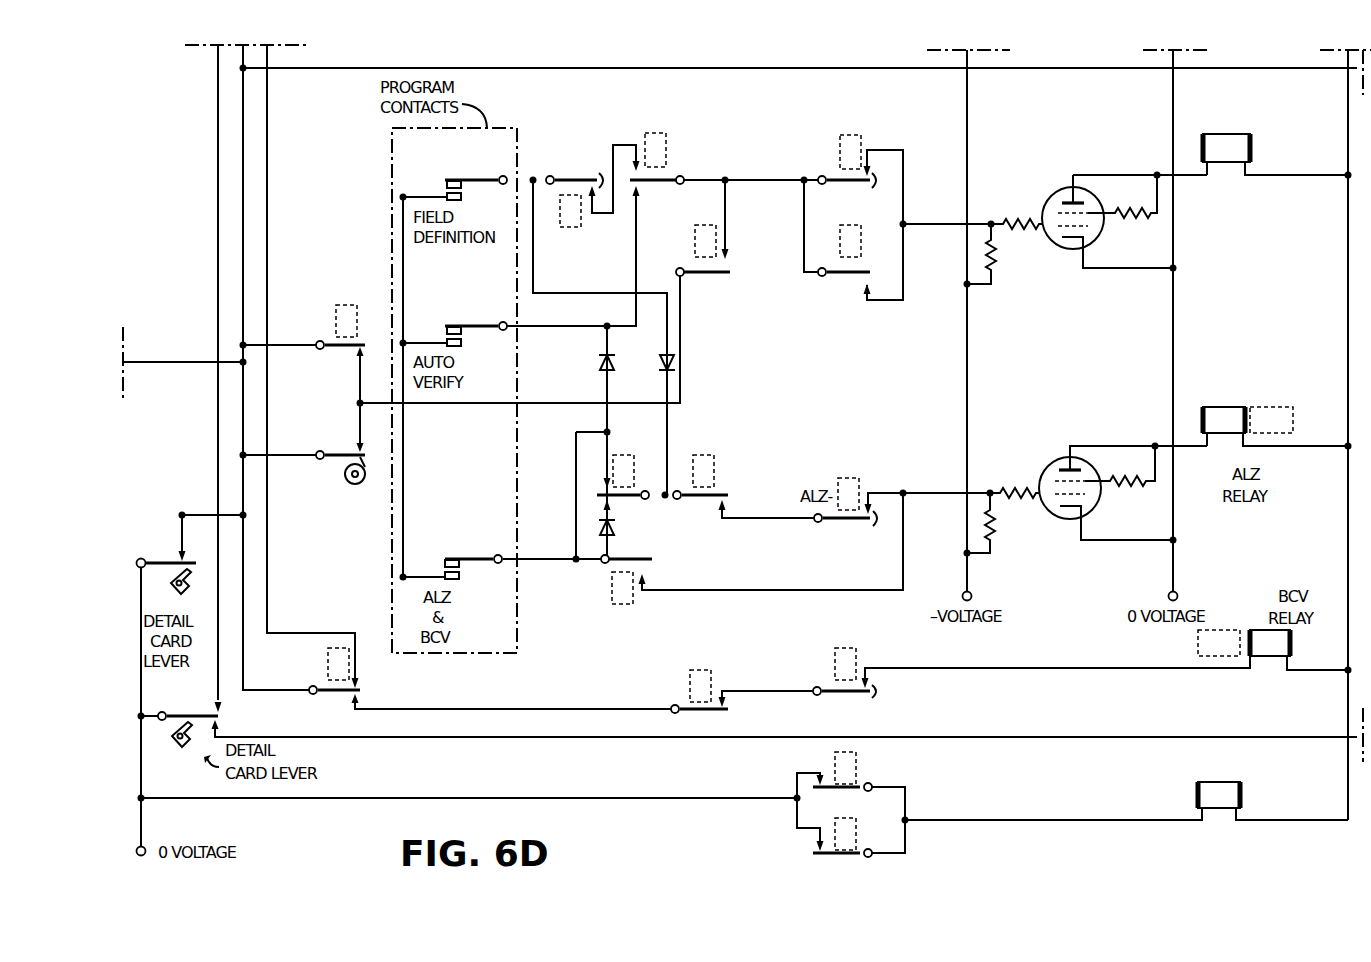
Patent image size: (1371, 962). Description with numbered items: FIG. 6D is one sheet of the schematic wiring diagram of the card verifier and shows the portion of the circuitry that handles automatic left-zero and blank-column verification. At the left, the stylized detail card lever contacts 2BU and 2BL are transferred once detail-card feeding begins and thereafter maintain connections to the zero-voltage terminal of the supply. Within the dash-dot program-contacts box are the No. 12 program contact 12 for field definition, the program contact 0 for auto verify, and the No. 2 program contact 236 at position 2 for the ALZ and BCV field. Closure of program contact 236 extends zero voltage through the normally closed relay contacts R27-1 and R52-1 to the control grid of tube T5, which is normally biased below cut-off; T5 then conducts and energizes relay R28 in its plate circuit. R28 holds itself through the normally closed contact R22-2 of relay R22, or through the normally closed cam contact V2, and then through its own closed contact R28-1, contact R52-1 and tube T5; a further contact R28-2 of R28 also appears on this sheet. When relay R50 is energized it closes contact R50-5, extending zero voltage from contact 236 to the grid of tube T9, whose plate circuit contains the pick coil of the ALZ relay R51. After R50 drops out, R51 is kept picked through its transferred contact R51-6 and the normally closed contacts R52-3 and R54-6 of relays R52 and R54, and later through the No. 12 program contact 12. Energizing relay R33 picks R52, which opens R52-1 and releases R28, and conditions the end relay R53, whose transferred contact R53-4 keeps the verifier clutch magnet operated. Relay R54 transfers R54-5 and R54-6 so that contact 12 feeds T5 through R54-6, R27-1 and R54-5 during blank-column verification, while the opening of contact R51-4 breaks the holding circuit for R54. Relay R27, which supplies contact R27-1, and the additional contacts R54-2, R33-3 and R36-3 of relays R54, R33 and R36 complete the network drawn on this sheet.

The No. 12 program contact 12 is at (474, 172).
The No. 2 program contact 236 is at (445, 182).
The program contact position 0 is at (472, 320).
The No. 2 program contact 2 is at (472, 554).
The relay R22 is at (345, 305).
The normally closed relay contact R22-2 is at (357, 351).
The cam contact V2 is at (346, 454).
The card lever contact 2BU is at (181, 562).
The card lever contact 2BL is at (211, 708).
The end relay R53 is at (326, 661).
The relay contact R53-4 is at (362, 688).
The relay R28 contact 2 R28-2 is at (603, 178).
The relay R27 is at (668, 148).
The normally closed relay contact R27-1 is at (645, 184).
The relay R28 is at (560, 228).
The relay contact R28-1 is at (730, 268).
The relay R54 is at (851, 135).
The relay contact R54-5 is at (860, 225).
The relay R52 is at (860, 251).
The normally closed relay contact R52-1 is at (862, 281).
The relay contact R54-6 is at (618, 498).
The normally closed relay contact R52-3 is at (720, 495).
The automatic left-zero control relay R51 is at (861, 478).
The relay contact R51-6 is at (902, 522).
The relay R50 is at (612, 593).
The relay contact R50-5 is at (652, 571).
The relay contact R51-4 is at (730, 711).
The relay R54 contact 2 R54-2 is at (1031, 681).
The relay R33 is at (856, 764).
The relay R33 contact 3 R33-3 is at (812, 781).
The relay R36 is at (857, 831).
The relay R36 contact 3 R36-3 is at (812, 849).
The tube T5 is at (1048, 200).
The tube T9 is at (1046, 468).